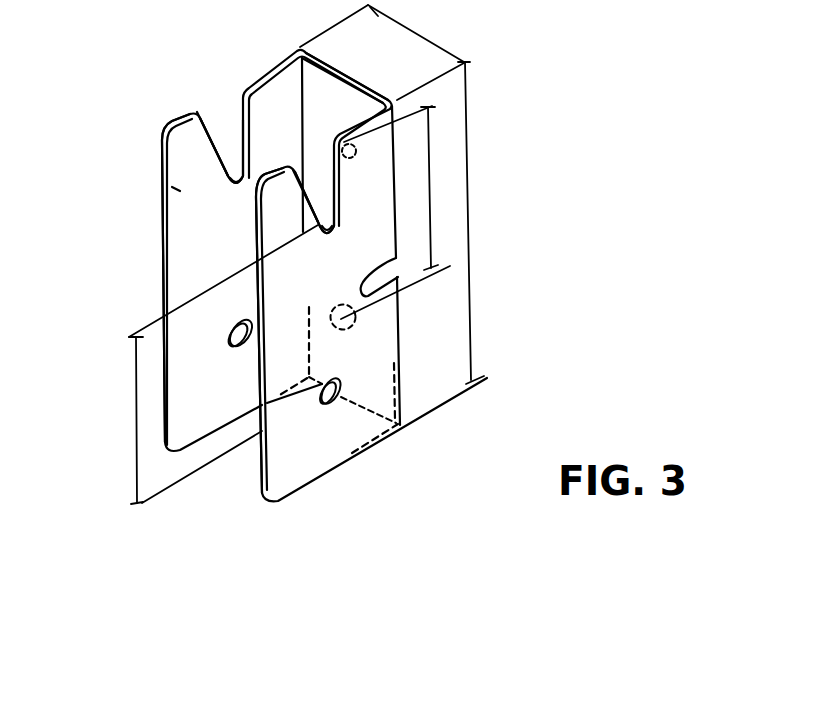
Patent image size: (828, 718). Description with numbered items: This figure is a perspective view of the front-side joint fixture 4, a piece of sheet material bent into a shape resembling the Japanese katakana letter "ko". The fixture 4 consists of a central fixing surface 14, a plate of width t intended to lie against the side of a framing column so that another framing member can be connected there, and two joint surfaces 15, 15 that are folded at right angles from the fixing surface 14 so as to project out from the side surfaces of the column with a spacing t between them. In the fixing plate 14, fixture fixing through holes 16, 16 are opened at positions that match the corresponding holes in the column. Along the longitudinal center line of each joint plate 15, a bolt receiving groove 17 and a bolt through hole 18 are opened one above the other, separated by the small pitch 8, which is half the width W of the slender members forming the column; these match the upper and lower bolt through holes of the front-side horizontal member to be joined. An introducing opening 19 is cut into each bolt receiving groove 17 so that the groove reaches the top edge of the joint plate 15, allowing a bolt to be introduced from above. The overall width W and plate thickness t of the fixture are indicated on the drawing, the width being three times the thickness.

The front-side joint fixture 4 is at (162, 246).
The small pitch 8 is at (136, 421).
The fixing surface 14 is at (350, 100).
The joint surfaces 15 is at (162, 178).
The fixture fixing through holes 16 is at (338, 153).
The bolt receiving grooves 17 is at (240, 182).
The bolt through holes 18 is at (231, 347).
The introducing opening 19 is at (241, 107).
The width W is at (472, 231).
The thickness t is at (410, 31).